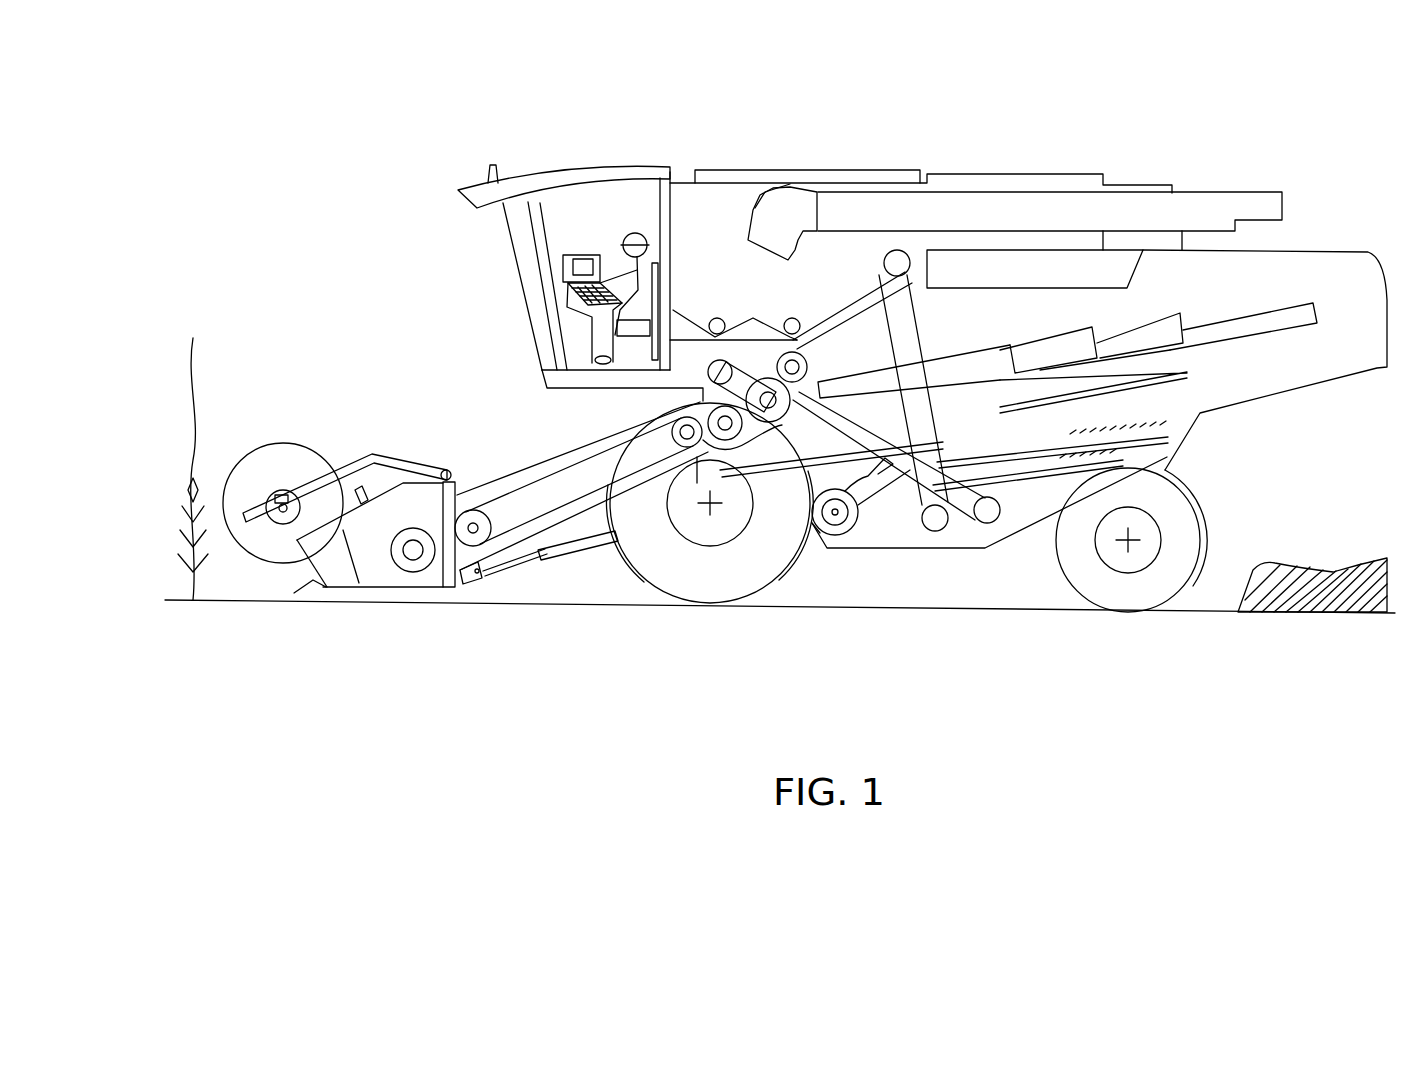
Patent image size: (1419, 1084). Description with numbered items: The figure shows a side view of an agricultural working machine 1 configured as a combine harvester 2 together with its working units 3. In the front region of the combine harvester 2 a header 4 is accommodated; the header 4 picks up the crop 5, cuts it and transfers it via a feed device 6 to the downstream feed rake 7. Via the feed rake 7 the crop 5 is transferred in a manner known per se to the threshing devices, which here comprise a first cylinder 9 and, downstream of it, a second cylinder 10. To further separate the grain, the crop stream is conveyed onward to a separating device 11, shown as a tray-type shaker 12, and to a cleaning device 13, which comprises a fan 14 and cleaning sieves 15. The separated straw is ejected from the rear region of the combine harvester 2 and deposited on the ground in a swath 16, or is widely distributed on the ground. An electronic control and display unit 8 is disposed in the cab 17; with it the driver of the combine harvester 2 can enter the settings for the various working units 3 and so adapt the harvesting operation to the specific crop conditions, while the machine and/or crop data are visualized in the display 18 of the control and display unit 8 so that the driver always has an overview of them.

The agricultural working machine 1 is at (805, 370).
The combine harvester 2 is at (771, 140).
The working units 3 is at (805, 370).
The header 4 is at (351, 510).
The crop 5 is at (191, 470).
The feed device 6 is at (421, 570).
The feed rake 7 is at (517, 470).
The control and display unit 8 is at (627, 226).
The first cylinder 9 is at (688, 428).
The second cylinder 10 is at (777, 372).
The separating device 11 is at (1067, 257).
The tray-type shaker 12 is at (1162, 330).
The cleaning device 13 is at (938, 575).
The fan 14 is at (826, 548).
The cleaning sieves 15 is at (1013, 477).
The swath 16 is at (1337, 572).
The cab 17 is at (526, 138).
The display 18 is at (585, 250).